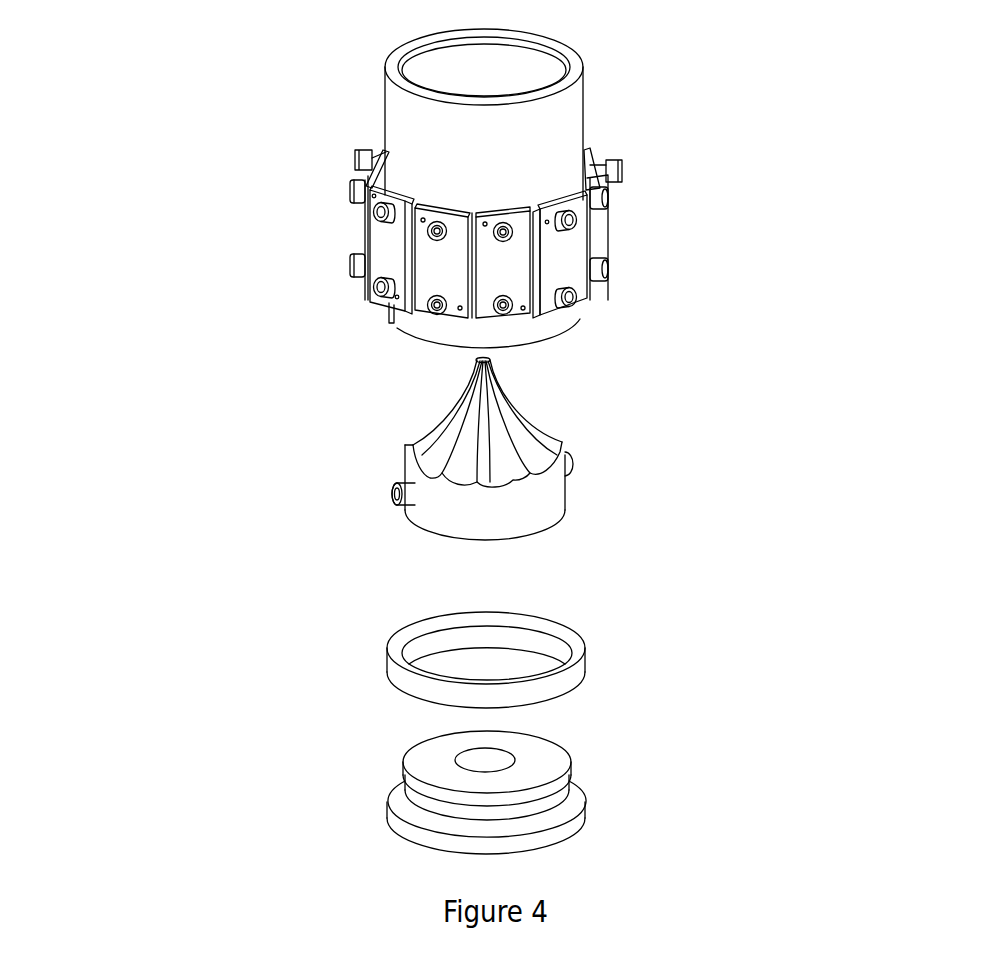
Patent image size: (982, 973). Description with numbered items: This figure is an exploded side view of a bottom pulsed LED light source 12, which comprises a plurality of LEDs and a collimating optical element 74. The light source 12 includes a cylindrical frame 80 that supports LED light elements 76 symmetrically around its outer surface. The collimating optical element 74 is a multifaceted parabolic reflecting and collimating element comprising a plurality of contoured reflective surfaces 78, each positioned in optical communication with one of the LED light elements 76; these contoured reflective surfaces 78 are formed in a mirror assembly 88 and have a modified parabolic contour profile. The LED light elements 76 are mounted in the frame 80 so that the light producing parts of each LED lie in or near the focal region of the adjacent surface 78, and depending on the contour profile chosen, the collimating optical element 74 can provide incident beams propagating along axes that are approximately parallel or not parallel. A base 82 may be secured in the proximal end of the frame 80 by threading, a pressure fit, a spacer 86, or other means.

The bottom pulsed LED light source 12 is at (172, 34).
The collimating optical element 74 is at (592, 461).
The LED light elements 76 is at (428, 284).
The contoured reflective surfaces 78 is at (455, 472).
The cylindrical frame 80 is at (534, 137).
The base 82 is at (585, 810).
The spacer 86 is at (585, 663).
The mirror assembly 88 is at (525, 508).